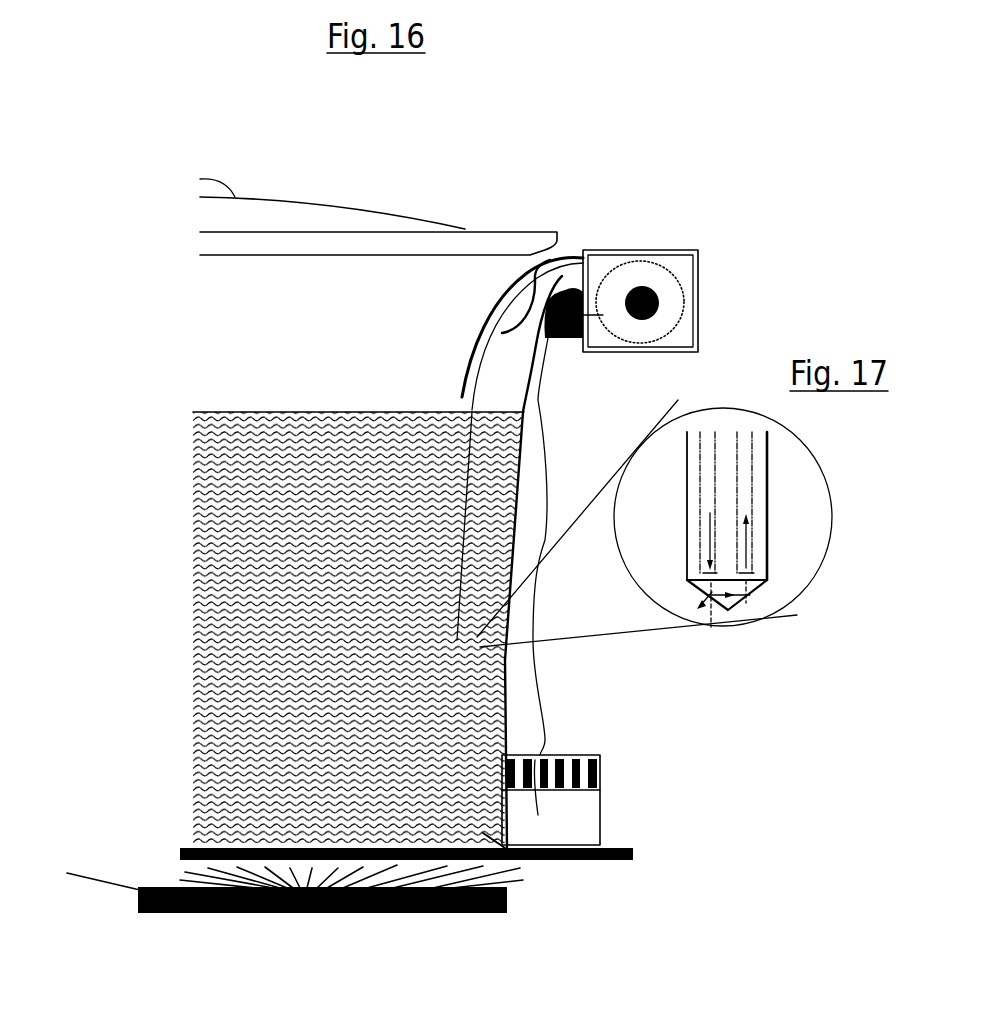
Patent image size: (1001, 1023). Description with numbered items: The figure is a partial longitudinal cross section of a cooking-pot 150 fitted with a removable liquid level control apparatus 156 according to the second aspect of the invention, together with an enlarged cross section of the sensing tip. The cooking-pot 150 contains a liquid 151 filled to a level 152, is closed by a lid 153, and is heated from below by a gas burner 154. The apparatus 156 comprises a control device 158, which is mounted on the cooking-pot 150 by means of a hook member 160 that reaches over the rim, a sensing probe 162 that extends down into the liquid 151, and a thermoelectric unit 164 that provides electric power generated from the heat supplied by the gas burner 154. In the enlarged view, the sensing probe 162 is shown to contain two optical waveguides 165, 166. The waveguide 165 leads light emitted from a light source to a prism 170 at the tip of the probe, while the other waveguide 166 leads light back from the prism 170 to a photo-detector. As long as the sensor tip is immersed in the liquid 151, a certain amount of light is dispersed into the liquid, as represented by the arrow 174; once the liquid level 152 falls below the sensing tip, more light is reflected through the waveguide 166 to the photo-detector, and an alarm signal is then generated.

In FIG. 16, the cooking-pot 150 is at (518, 712).
In FIG. 16, the liquid 151 is at (262, 636).
In FIG. 16, the level 152 is at (235, 410).
In FIG. 16, the lid 153 is at (360, 198).
In FIG. 16, the gas burner 154 is at (362, 914).
In FIG. 16, the liquid level control apparatus 156 is at (703, 282).
In FIG. 16, the control device 158 is at (672, 276).
In FIG. 16, the hook member 160 is at (567, 248).
In FIG. 16, the sensing probe 162 is at (457, 640).
In FIG. 17, the sensing probe 162 is at (772, 530).
In FIG. 16, the thermoelectric unit 164 is at (572, 813).
In FIG. 17, the optical waveguide 165 is at (707, 483).
In FIG. 17, the optical waveguide 166 is at (747, 495).
In FIG. 17, the prism 170 is at (753, 600).
In FIG. 17, the arrow 174 is at (713, 612).